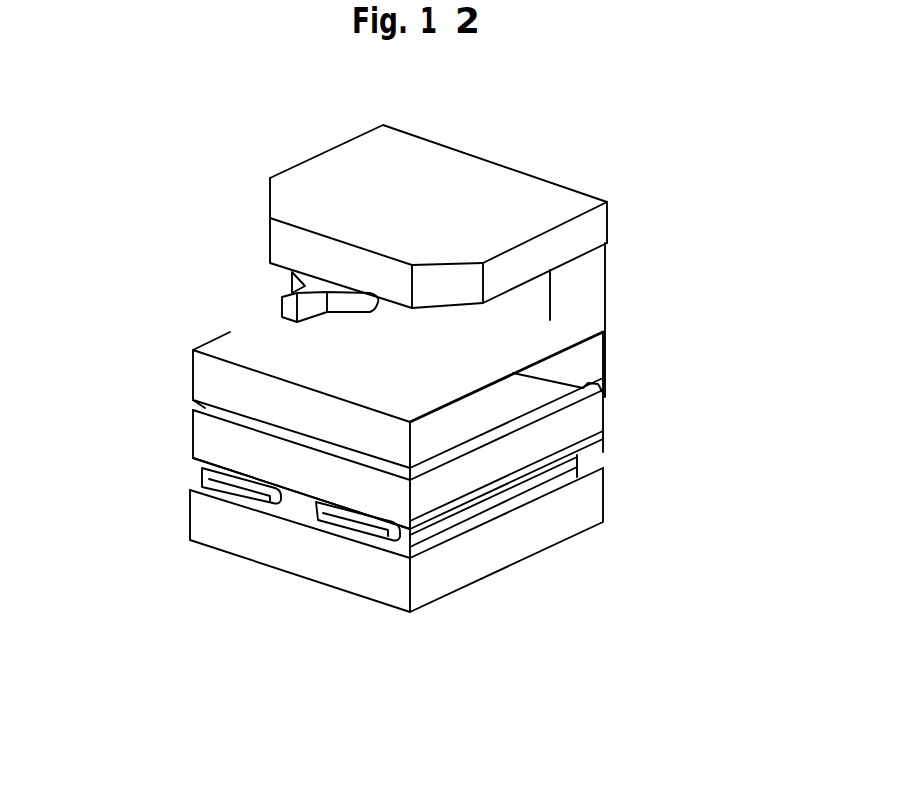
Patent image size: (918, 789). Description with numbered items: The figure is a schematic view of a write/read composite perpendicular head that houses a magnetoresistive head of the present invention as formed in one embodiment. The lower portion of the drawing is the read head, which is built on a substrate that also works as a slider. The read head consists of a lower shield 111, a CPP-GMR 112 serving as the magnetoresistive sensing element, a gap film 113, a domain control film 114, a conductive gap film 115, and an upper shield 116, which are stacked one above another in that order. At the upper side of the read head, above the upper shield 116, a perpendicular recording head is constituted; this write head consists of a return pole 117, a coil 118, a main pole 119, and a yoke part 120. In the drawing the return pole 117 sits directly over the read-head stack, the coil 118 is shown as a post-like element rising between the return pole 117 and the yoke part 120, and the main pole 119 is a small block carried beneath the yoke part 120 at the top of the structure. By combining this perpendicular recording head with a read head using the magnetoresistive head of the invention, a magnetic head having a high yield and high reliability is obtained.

The lower shield 111 is at (382, 590).
The CPP-GMR 112 is at (297, 505).
The gap film 113 is at (221, 474).
The domain control film 114 is at (193, 457).
The conductive gap film 115 is at (432, 539).
The upper shield 116 is at (463, 475).
The return pole 117 is at (205, 380).
The coil 118 is at (603, 393).
The main pole 119 is at (282, 297).
The yoke part 120 is at (313, 180).